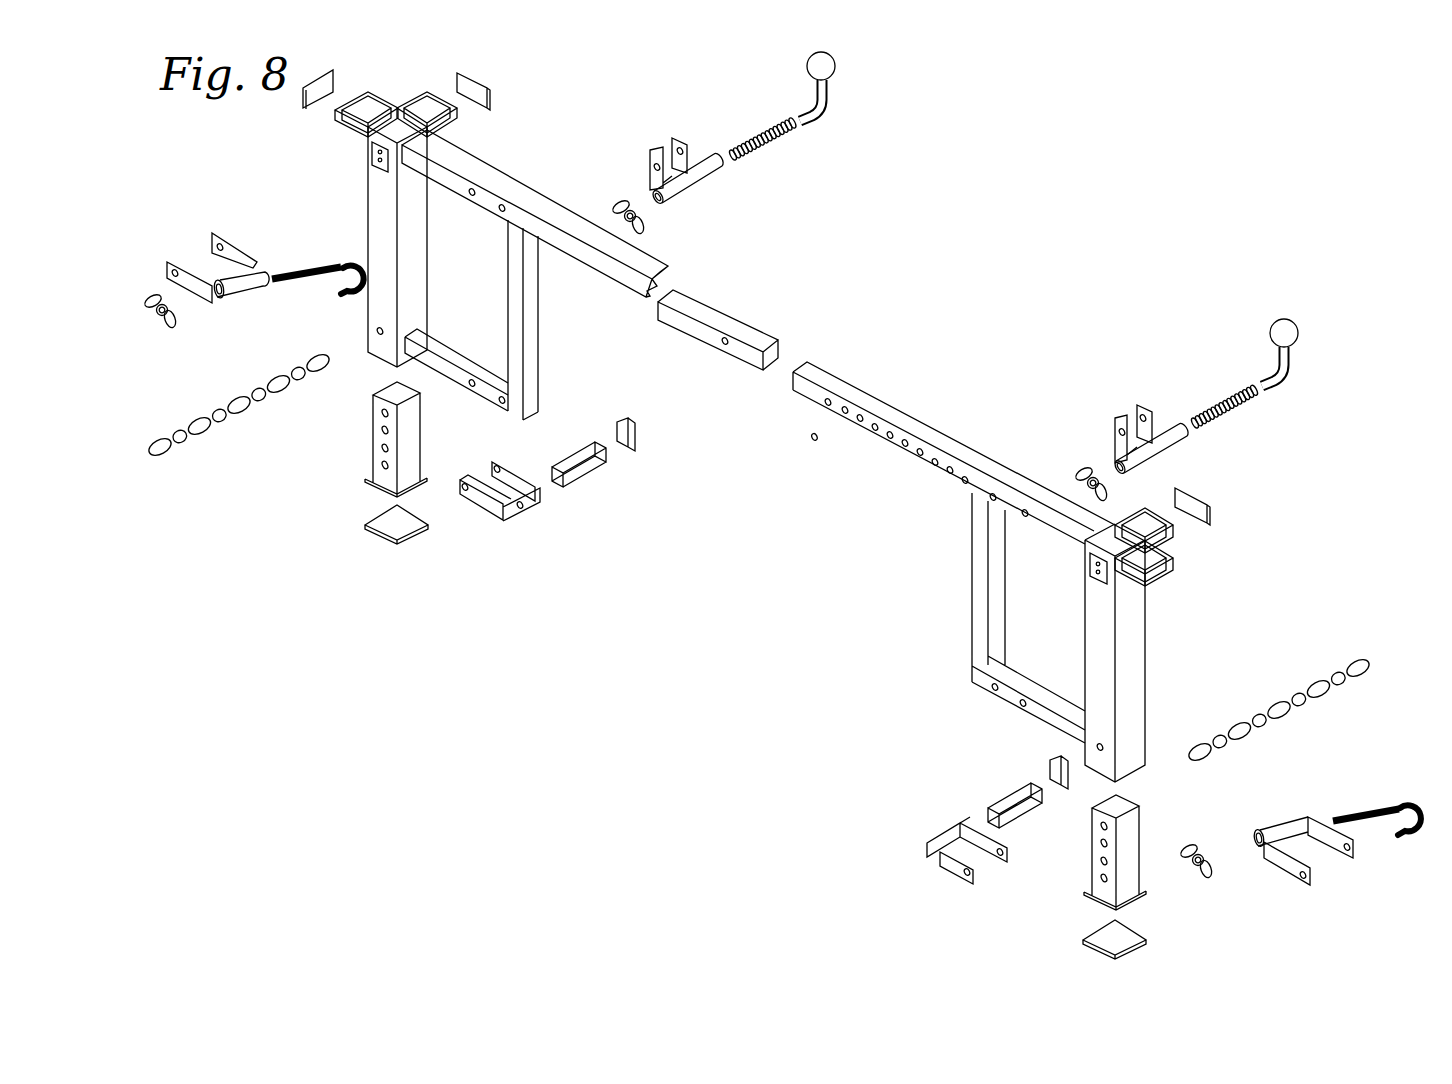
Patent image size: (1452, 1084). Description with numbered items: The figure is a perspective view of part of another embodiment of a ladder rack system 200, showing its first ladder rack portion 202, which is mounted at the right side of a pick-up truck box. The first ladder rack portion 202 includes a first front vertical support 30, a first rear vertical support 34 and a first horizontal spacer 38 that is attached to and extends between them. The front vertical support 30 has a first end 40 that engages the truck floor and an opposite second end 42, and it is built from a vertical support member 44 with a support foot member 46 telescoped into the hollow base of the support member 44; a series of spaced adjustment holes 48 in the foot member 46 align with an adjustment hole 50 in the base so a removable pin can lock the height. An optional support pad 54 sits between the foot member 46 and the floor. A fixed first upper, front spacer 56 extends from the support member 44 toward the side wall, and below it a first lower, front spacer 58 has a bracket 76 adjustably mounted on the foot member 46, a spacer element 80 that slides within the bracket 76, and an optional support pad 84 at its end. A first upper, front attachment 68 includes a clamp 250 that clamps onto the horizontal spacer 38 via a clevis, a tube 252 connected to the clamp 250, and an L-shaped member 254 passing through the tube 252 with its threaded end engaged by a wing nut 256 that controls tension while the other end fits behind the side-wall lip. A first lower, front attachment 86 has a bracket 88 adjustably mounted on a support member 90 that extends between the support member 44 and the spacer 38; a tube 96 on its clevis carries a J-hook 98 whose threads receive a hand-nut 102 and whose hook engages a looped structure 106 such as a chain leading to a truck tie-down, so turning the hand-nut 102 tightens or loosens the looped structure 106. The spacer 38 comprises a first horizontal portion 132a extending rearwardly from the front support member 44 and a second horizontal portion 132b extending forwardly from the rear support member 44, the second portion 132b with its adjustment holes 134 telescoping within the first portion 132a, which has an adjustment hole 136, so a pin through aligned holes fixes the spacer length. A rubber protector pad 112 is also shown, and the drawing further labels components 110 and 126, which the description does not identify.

The first front vertical support 30 is at (318, 533).
The first rear vertical support 34 is at (882, 732).
The first horizontal spacer 38 is at (467, 163).
The first end 40 is at (418, 498).
The second end 42 is at (487, 87).
The vertical support member 44 is at (413, 240).
The support foot member 46 is at (373, 420).
The adjustment holes 48 is at (385, 462).
The adjustment hole 50 is at (375, 330).
The support pad 54 is at (375, 520).
The first upper, front spacer 56 is at (441, 110).
The first lower, front spacer 58 is at (598, 524).
The first upper, front attachment 68 is at (822, 175).
The bracket 76 is at (518, 512).
The spacer element 80 is at (585, 480).
The support pad 84 is at (628, 420).
The first lower, front attachment 86 is at (192, 238).
The bracket 88 is at (240, 238).
The support member 90 is at (532, 340).
The tube 96 is at (1278, 820).
The J-hook 98 is at (345, 260).
The hand-nut 102 is at (168, 327).
The looped structure 106 is at (178, 447).
The collar frame 110 is at (347, 122).
The rubber protector pad 112 is at (335, 78).
The mounting plate 126 is at (372, 155).
The first horizontal portion 132a is at (505, 195).
The second horizontal portion 132b is at (900, 422).
The adjustment holes 134 is at (855, 425).
The adjustment hole 136 is at (715, 347).
The ladder rack system 200 is at (1085, 152).
The first ladder rack portion 202 is at (895, 373).
The clamp 250 is at (680, 135).
The tube 252 is at (715, 182).
The L-shaped member 254 is at (818, 113).
The wing nut 256 is at (645, 225).